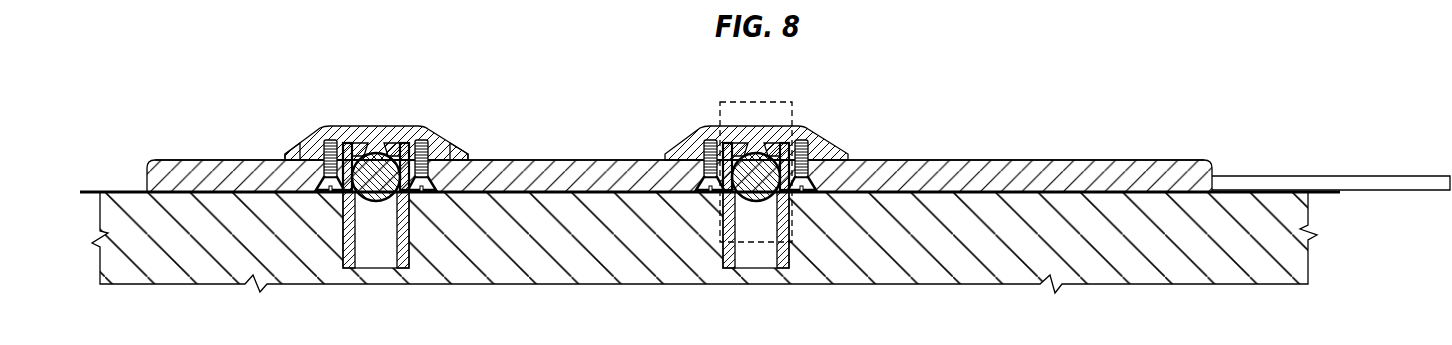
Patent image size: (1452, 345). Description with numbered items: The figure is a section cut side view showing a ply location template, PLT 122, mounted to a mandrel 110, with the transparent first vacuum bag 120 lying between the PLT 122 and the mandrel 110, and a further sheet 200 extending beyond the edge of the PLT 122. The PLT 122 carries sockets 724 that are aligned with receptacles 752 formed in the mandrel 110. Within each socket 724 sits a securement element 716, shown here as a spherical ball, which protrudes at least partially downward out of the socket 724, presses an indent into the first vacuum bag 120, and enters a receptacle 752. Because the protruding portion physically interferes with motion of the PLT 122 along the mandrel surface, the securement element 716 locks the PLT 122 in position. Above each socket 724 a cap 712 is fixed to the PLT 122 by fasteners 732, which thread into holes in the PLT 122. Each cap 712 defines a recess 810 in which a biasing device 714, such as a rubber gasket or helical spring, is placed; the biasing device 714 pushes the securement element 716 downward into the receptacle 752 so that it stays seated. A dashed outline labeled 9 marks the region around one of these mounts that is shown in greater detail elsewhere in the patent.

The mandrel 110 is at (143, 284).
The first vacuum bag 120 is at (93, 190).
The ply location template 122 is at (1045, 158).
The sheet 200 is at (1352, 175).
The cap 712 is at (442, 133).
The biasing device 714 is at (352, 137).
The securement element 716 is at (375, 150).
The socket 724 is at (458, 158).
The fastener 732 is at (306, 152).
The receptacle 752 is at (373, 260).
The recess 810 is at (372, 147).
The detail region of FIG. 9 is at (780, 100).